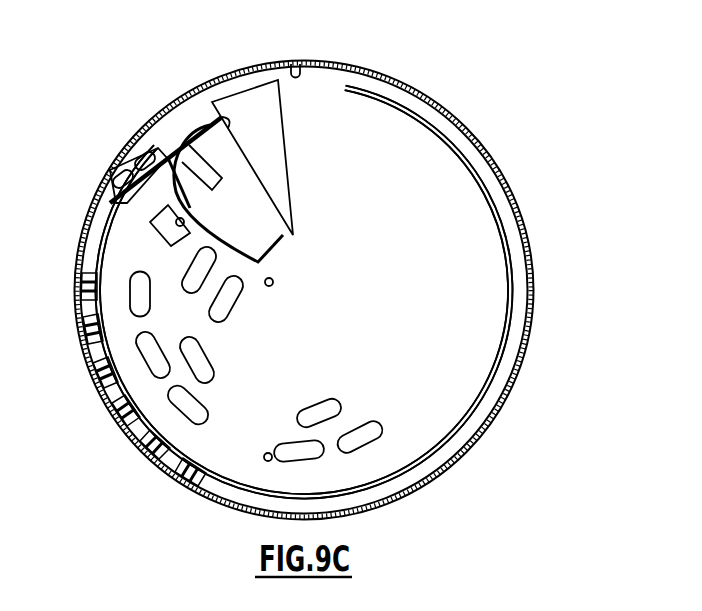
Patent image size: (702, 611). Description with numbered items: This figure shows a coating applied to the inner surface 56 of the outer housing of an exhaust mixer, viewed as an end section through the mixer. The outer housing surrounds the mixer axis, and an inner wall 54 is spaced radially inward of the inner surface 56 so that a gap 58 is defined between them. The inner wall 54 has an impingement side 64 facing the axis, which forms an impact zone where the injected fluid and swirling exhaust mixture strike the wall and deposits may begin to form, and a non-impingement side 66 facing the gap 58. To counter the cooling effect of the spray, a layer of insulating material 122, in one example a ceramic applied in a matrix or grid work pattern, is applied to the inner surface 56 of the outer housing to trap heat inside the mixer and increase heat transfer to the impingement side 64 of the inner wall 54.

The inner wall 54 is at (473, 177).
The inner surface 56 is at (297, 63).
The gap 58 is at (513, 258).
The impingement side 64 is at (505, 258).
The non-impingement side 66 is at (498, 214).
The layer of insulating material 122 is at (409, 87).